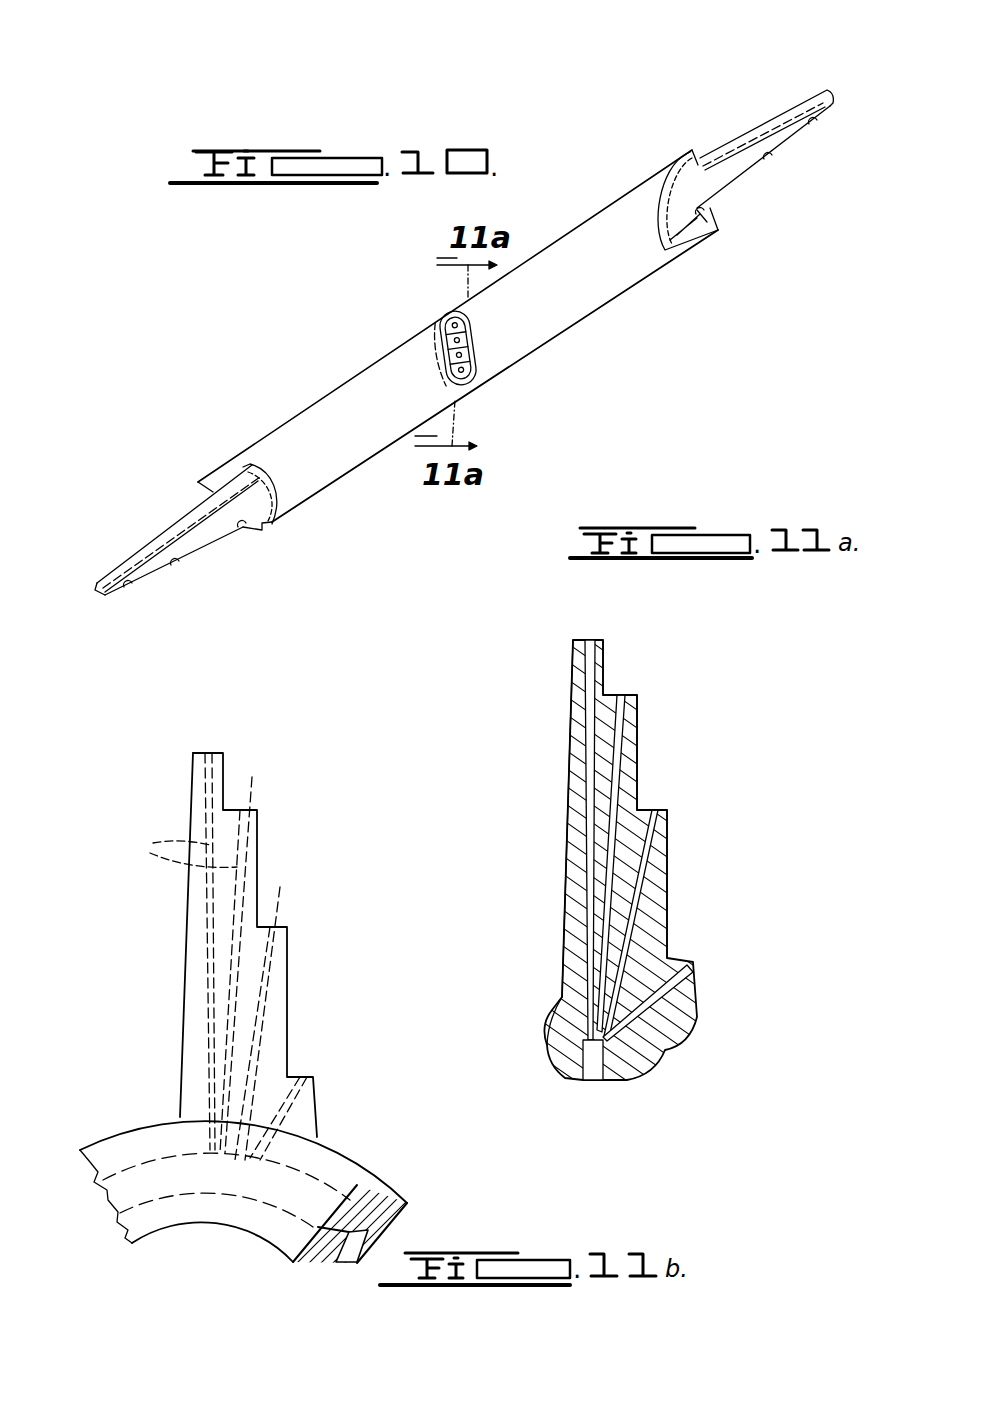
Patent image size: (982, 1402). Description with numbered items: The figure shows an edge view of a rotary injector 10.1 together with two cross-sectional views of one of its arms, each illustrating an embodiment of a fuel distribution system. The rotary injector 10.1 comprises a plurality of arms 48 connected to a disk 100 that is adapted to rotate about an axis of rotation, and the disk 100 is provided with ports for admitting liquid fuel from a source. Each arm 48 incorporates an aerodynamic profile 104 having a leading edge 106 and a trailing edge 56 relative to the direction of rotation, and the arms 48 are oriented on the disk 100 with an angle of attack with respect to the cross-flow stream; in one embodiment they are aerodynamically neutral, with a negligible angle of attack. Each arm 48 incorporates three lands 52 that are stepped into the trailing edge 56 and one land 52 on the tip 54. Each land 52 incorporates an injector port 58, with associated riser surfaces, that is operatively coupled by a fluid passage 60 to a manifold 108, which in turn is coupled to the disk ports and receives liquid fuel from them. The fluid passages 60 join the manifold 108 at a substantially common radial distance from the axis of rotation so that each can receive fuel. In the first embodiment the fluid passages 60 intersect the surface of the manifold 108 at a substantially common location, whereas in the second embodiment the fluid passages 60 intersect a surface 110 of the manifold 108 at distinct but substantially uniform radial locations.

In FIG. 10, the rotary injector 10.1 is at (343, 334).
In FIG. 10, the arm 48 is at (773, 125).
In FIG. 11A, the arm 48 is at (570, 840).
In FIG. 10, the land 52 is at (175, 565).
In FIG. 11A, the land 52 is at (613, 688).
In FIG. 11B, the land 52 is at (200, 752).
In FIG. 10, the tip 54 is at (92, 585).
In FIG. 11A, the tip 54 is at (569, 636).
In FIG. 10, the trailing edge 56 is at (753, 192).
In FIG. 11A, the trailing edge 56 is at (661, 757).
In FIG. 11B, the trailing edge 56 is at (282, 834).
In FIG. 11A, the injector port 58 is at (588, 638).
In FIG. 11B, the injector port 58 is at (210, 753).
In FIG. 11A, the fluid passage 60 is at (633, 908).
In FIG. 11B, the fluid passage 60 is at (347, 1095).
In FIG. 10, the disk 100 is at (647, 273).
In FIG. 11A, the disk 100 is at (552, 1030).
In FIG. 11B, the disk 100 is at (362, 1162).
In FIG. 10, the aerodynamic profile 104 is at (480, 362).
In FIG. 10, the leading edge 106 is at (723, 148).
In FIG. 11A, the leading edge 106 is at (570, 732).
In FIG. 11B, the leading edge 106 is at (190, 890).
In FIG. 11A, the manifold 108 is at (590, 1083).
In FIG. 11B, the manifold 108 is at (327, 1263).
In FIG. 11B, the surface of the manifold 110 is at (407, 1203).